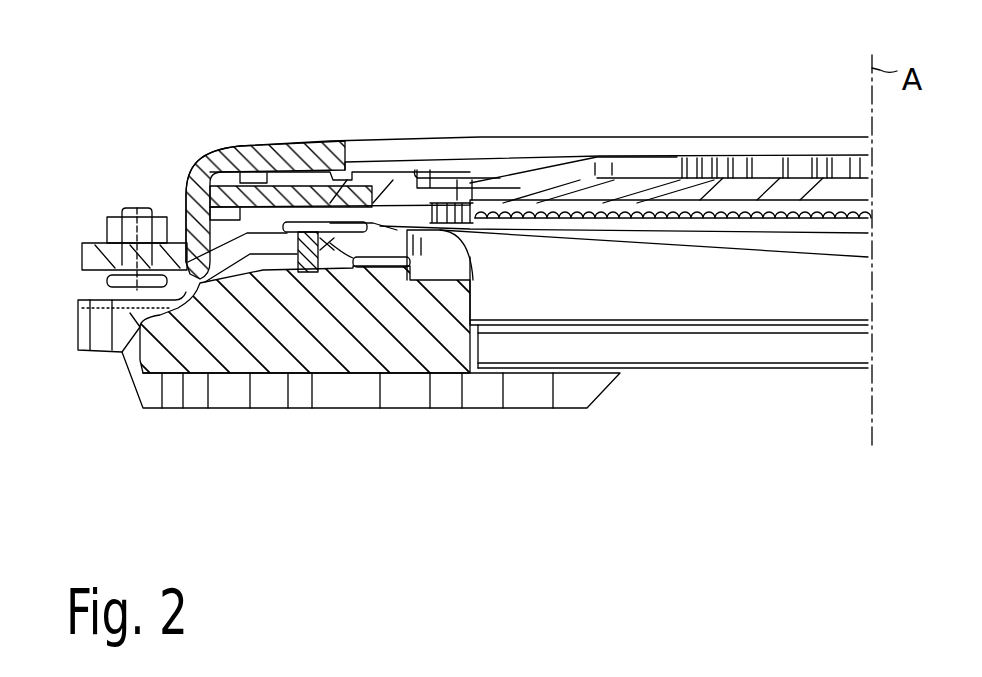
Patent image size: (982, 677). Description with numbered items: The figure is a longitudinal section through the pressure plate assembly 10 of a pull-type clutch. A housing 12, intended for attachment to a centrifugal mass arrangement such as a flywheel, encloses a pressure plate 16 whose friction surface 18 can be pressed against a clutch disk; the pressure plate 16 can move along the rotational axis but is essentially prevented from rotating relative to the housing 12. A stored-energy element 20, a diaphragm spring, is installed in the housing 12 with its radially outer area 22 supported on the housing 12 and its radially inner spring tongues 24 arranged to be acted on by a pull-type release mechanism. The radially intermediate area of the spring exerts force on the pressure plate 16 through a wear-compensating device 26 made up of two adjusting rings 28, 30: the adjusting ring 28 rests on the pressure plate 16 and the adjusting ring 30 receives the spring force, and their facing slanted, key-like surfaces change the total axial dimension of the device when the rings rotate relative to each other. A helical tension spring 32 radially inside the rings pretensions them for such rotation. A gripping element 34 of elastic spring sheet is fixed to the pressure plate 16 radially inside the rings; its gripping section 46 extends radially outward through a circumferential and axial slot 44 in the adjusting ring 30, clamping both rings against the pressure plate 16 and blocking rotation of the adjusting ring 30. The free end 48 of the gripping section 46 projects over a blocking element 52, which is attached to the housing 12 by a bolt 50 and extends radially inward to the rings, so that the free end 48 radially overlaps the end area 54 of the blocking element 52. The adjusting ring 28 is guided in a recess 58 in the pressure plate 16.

The pressure plate assembly 10 is at (752, 104).
The housing 12 is at (660, 135).
The pressure plate 16 is at (265, 355).
The friction surface 18 is at (338, 380).
The stored-energy element 20 is at (313, 236).
The radially outer area 22 is at (222, 148).
The spring tongues 24 is at (490, 187).
The wear-compensating device 26 is at (362, 213).
The adjusting ring 28 is at (318, 275).
The adjusting ring 30 is at (480, 259).
The helical tension spring 32 is at (777, 213).
The gripping element 34 is at (325, 245).
The slot 44 is at (297, 222).
The gripping section 46 is at (321, 232).
The free end 48 is at (292, 200).
The bolt 50 is at (136, 206).
The blocking element 52 is at (190, 272).
The end area 54 is at (253, 148).
The recess 58 is at (330, 285).